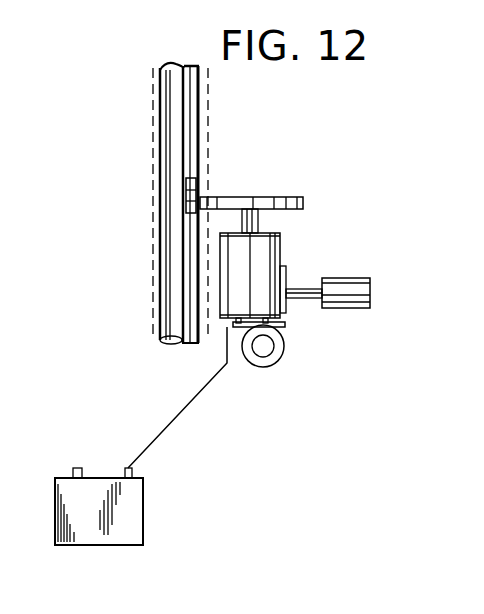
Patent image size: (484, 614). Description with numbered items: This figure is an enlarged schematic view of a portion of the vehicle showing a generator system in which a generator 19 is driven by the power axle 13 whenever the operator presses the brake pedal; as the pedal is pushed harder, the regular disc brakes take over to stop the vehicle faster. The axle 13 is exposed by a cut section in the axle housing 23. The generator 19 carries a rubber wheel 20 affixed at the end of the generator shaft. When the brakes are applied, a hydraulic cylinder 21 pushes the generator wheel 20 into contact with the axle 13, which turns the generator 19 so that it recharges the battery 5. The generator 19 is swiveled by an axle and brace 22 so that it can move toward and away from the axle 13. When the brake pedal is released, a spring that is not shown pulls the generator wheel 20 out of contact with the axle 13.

The battery 5 is at (86, 533).
The power axle 13 is at (170, 140).
The generator 19 is at (257, 263).
The rubber wheel 20 is at (247, 197).
The hydraulic cylinder 21 is at (343, 298).
The axle and brace 22 is at (285, 326).
The axle housing 23 is at (208, 178).